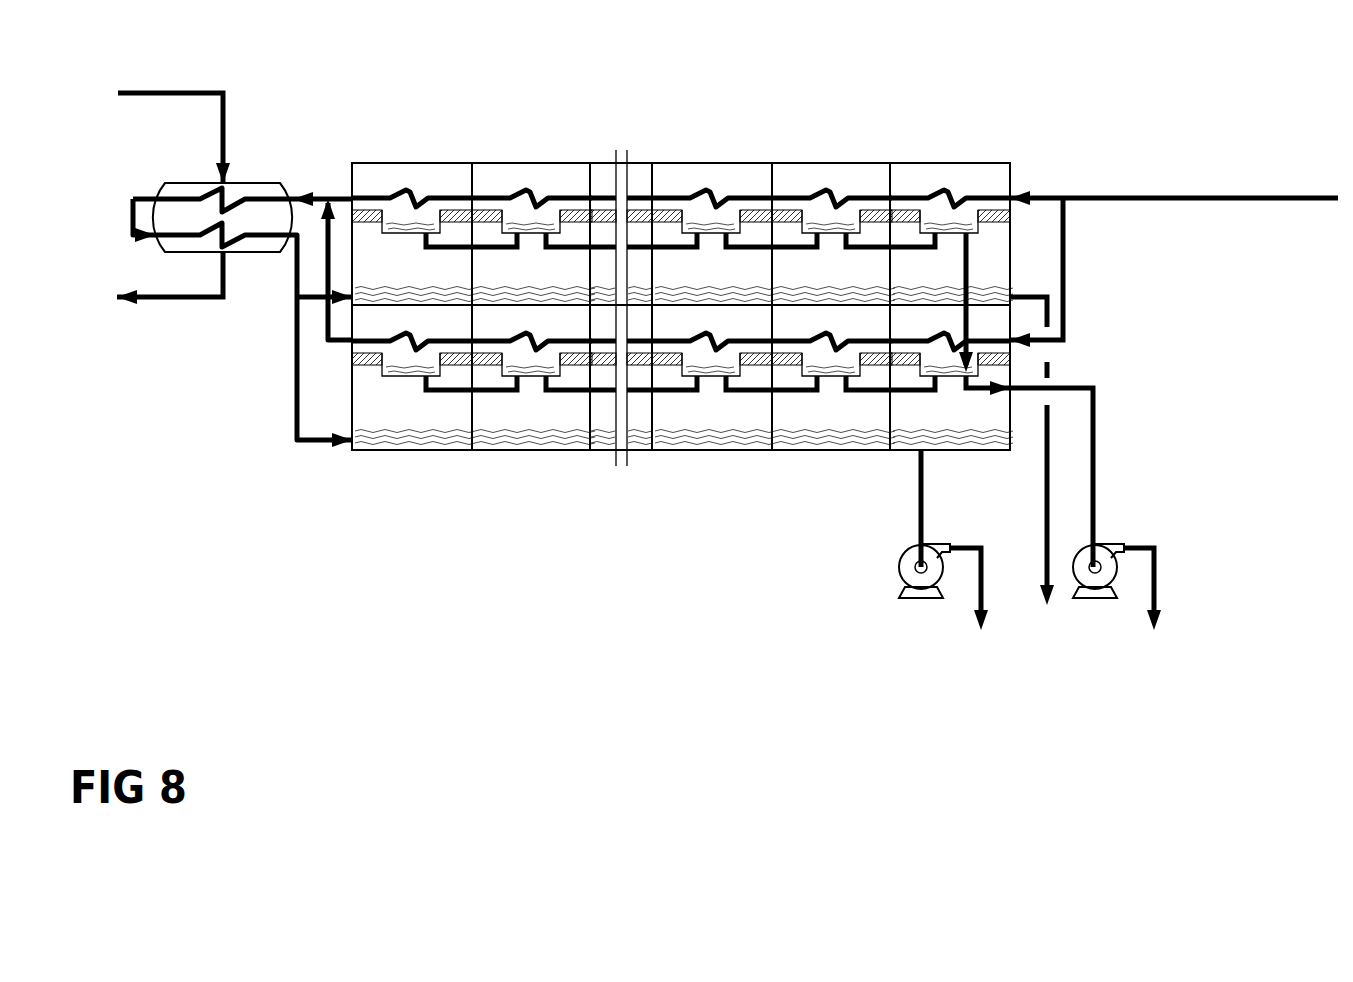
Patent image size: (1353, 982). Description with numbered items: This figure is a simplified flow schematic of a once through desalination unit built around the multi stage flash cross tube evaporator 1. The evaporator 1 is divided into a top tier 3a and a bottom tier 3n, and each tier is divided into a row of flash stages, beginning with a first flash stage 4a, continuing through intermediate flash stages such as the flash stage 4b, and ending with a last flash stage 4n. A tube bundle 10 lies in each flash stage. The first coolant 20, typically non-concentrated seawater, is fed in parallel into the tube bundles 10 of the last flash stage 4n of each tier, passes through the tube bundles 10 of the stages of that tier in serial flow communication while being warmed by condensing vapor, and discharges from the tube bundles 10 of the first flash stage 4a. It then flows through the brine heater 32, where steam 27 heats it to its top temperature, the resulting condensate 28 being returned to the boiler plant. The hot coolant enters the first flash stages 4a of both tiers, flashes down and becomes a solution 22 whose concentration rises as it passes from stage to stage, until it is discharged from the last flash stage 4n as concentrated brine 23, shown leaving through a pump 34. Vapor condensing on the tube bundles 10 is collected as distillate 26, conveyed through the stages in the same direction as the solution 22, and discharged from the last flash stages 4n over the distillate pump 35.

The evaporator 1 is at (394, 163).
The top tier 3a is at (350, 180).
The bottom tier 3n is at (352, 408).
The first flash stage 4a is at (403, 279).
The intermediate flash stage 4b is at (540, 279).
The last flash stage 4n is at (943, 282).
The tube bundle 10 is at (530, 190).
The first coolant 20 is at (1242, 197).
The solution 22 is at (553, 437).
The concentrated brine 23 is at (978, 588).
The distillate 26 is at (1155, 590).
The steam 27 is at (172, 93).
The condensate 28 is at (162, 298).
The brine heater 32 is at (257, 183).
The pump 34 is at (898, 578).
The distillate pump 35 is at (1078, 586).